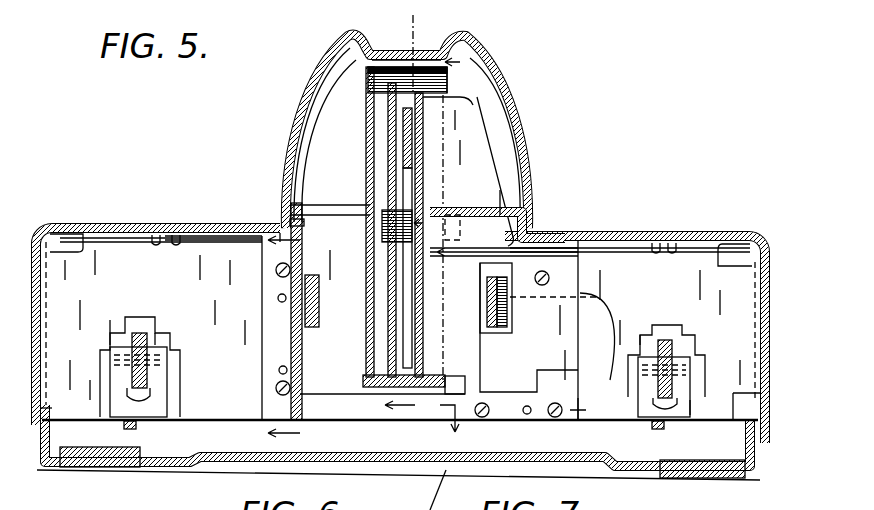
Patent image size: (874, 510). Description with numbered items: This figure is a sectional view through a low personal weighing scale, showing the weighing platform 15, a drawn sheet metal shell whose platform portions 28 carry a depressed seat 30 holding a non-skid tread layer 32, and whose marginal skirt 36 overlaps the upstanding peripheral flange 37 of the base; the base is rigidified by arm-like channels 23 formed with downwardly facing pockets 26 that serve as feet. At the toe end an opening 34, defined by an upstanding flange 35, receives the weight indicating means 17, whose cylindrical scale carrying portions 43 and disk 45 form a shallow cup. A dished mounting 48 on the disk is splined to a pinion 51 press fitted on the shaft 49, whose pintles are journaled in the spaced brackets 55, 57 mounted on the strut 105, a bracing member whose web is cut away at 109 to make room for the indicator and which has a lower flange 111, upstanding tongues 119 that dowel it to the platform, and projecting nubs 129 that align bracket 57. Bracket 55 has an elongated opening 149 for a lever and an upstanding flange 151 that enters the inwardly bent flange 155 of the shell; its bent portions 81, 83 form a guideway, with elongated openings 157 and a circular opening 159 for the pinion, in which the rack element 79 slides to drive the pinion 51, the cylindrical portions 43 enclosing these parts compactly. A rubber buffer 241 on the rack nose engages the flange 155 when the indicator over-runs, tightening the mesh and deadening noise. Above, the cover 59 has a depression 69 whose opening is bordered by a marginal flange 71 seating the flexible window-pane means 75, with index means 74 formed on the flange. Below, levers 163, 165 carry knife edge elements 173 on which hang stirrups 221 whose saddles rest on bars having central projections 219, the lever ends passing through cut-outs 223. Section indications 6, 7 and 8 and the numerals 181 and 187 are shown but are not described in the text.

The section line 6 is at (428, 241).
The section line 7 is at (284, 339).
The section line 8 is at (520, 398).
The weighing platform 15 is at (680, 201).
The weight indicating means 17 is at (318, 122).
The arm-like channels 23 is at (165, 466).
The downwardly facing pockets 26 is at (100, 467).
The platform portions 28 is at (208, 222).
The depressed seat 30 is at (84, 240).
The tread layer 32 is at (142, 222).
The opening 34 is at (280, 200).
The upstanding flange 35 is at (290, 215).
The skirt 36 is at (34, 256).
The upstanding peripheral flange 37 is at (42, 450).
The cylindrical scale carrying portions 43 is at (440, 82).
The disk 45 is at (366, 100).
The dished mounting 48 is at (366, 168).
The shaft 49 is at (316, 206).
The pinion 51 is at (438, 260).
The bracket 55 is at (520, 212).
The bracket 57 is at (304, 248).
The cover 59 is at (506, 88).
The depression 69 is at (360, 44).
The marginal flange 71 is at (362, 58).
The index means 74 is at (436, 50).
The window-pane means 75 is at (402, 50).
The rack element 79 is at (430, 142).
The spaced portion of bracket 81 is at (410, 146).
The spaced portion of bracket 83 is at (427, 193).
The strut 105 is at (56, 235).
The cut-away 109 is at (590, 300).
The flange 111 is at (190, 421).
The upstanding tongues 119 is at (168, 235).
The projecting nubs 129 is at (278, 300).
The elongated opening 149 is at (500, 352).
The upstanding flange 151 is at (458, 113).
The inwardly bent flange 155 is at (480, 237).
The elongated openings 157 is at (400, 345).
The circular opening 159 is at (312, 276).
The lever 163 is at (500, 318).
The lever 165 is at (140, 325).
The knife edge element 173 is at (118, 345).
The wall clip 181 is at (762, 320).
The pivot 187 is at (278, 297).
The central projection 219 is at (125, 421).
The stirrups 221 is at (170, 385).
The cut-outs 223 is at (175, 335).
The buffer 241 is at (525, 176).